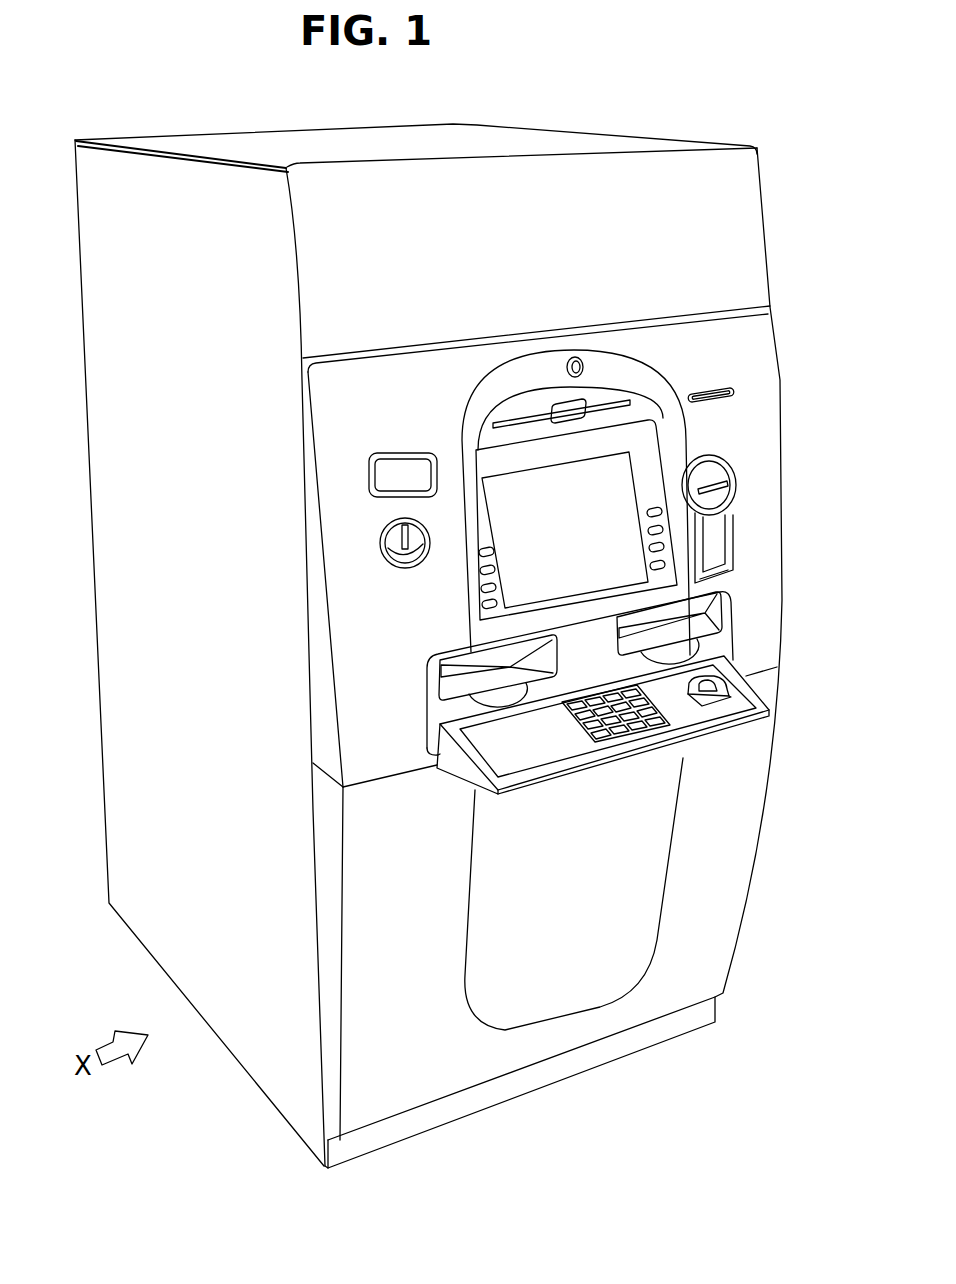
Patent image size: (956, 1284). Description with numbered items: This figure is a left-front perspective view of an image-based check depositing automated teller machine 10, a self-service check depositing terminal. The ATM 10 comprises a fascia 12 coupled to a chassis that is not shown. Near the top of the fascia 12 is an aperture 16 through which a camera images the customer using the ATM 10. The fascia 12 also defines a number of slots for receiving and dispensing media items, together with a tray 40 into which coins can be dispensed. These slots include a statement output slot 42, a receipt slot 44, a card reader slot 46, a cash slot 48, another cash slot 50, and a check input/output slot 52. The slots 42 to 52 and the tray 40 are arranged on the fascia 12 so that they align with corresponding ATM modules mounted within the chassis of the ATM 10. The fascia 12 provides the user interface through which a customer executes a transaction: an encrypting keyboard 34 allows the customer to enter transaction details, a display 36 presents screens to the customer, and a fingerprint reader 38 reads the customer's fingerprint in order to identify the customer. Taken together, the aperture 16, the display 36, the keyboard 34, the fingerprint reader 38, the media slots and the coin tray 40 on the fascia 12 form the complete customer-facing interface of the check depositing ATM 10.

The image-based check depositing automated teller machine 10 is at (616, 98).
The fascia 12 is at (303, 418).
The aperture 16 is at (581, 358).
The encrypting keyboard 34 is at (673, 718).
The display 36 is at (632, 456).
The fingerprint reader 38 is at (735, 688).
The tray 40 is at (383, 545).
The statement output slot 42 is at (606, 402).
The receipt slot 44 is at (733, 385).
The card reader slot 46 is at (731, 493).
The cash slot 48 is at (437, 680).
The cash slot 50 is at (705, 621).
The check input/output slot 52 is at (369, 477).